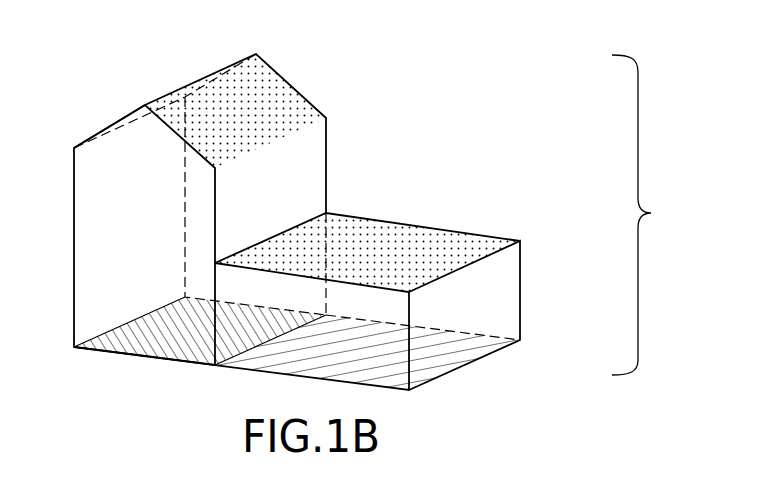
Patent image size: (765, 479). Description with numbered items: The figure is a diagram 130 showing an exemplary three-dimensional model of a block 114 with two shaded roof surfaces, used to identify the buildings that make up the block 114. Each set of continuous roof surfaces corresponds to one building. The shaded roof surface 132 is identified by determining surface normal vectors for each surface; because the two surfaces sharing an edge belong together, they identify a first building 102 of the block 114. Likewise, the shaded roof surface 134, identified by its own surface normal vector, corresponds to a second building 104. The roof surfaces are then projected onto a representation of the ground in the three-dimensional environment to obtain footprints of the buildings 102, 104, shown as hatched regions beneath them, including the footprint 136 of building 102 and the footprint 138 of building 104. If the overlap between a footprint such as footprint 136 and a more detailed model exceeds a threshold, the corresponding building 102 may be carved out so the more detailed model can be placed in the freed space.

The first building 102 is at (327, 150).
The second building 104 is at (520, 292).
The block 114 is at (651, 213).
The diagram 130 is at (489, 102).
The roof surface 132 is at (303, 76).
The roof surface 134 is at (400, 240).
The footprint 136 is at (107, 352).
The second bottom surface 138 is at (473, 363).